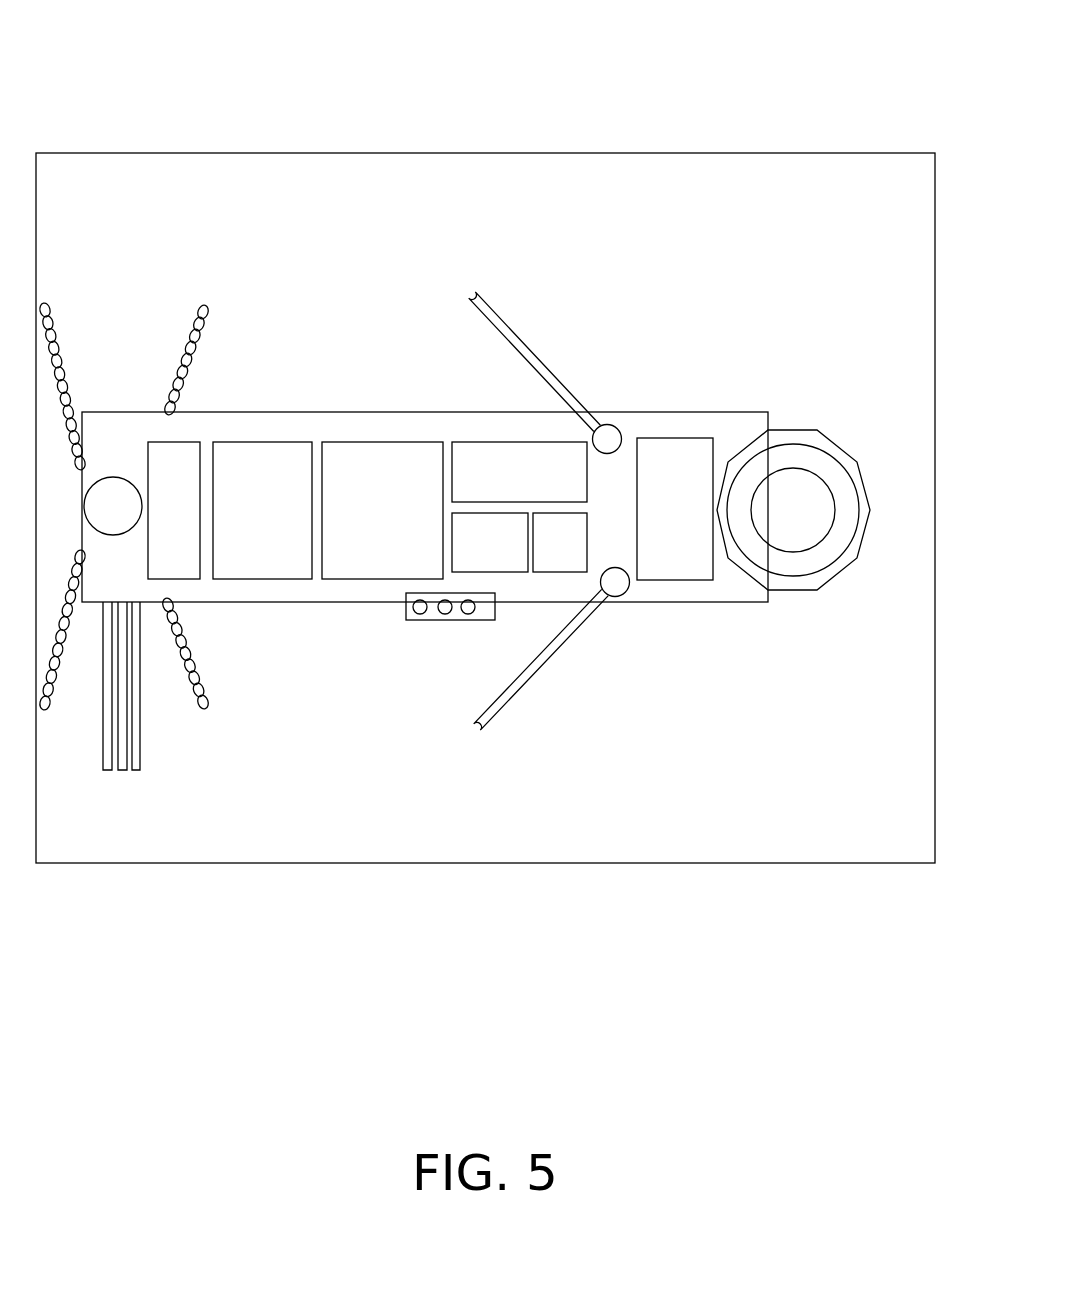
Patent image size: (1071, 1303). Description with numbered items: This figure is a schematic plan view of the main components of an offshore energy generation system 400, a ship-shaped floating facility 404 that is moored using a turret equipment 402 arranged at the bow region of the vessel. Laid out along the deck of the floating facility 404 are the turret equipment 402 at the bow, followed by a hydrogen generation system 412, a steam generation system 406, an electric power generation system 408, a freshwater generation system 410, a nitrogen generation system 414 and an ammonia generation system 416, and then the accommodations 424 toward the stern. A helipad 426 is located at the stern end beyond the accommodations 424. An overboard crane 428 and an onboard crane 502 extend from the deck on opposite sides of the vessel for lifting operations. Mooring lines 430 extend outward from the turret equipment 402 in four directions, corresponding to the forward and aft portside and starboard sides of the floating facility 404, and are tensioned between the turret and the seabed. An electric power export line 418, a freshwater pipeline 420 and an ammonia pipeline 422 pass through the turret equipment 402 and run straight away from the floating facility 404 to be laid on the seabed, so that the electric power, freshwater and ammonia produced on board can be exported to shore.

The offshore energy generation system 400 is at (879, 68).
The turret equipment 402 is at (113, 506).
The floating facility 404 is at (425, 545).
The steam generation system 406 is at (262, 510).
The electric power generation system 408 is at (382, 510).
The freshwater generation system 410 is at (519, 472).
The hydrogen generation system 412 is at (174, 510).
The nitrogen generation system 414 is at (490, 542).
The ammonia generation system 416 is at (560, 542).
The electric power export line 418 is at (233, 686).
The freshwater pipeline 420 is at (285, 715).
The ammonia pipeline 422 is at (320, 689).
The accommodations 424 is at (675, 509).
The helipad 426 is at (805, 474).
The overboard crane 428 is at (545, 345).
The mooring lines 430 is at (125, 489).
The onboard crane 502 is at (552, 656).